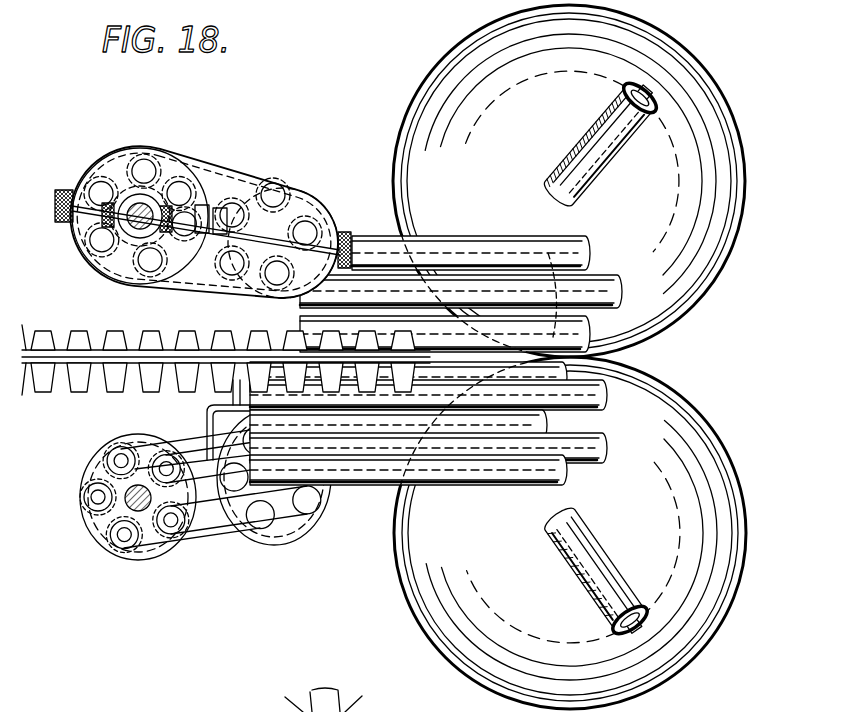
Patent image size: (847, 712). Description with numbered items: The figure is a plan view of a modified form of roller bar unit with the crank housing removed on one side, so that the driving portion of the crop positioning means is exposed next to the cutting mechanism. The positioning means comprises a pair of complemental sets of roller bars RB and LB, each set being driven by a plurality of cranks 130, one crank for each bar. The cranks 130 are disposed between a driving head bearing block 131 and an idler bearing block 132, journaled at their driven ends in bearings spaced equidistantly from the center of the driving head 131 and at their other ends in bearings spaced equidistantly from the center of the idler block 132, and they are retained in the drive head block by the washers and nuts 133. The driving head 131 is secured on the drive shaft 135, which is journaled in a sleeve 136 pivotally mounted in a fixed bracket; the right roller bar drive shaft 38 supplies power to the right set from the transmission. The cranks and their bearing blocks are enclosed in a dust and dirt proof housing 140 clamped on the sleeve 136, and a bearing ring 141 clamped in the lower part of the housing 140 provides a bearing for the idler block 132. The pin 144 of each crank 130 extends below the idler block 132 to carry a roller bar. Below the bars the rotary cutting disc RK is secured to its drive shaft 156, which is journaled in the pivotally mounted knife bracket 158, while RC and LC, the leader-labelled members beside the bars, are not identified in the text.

The right roller bar drive shaft 38 is at (138, 205).
The crank 130 is at (207, 177).
The driving head bearing block 131 is at (157, 553).
The idler bearing block 132 is at (285, 527).
The washers and nuts 133 is at (113, 452).
The drive shaft 135 is at (133, 502).
The sleeve 136 is at (140, 198).
The housing 140 is at (227, 165).
The bearing ring 141 is at (307, 163).
The pin 144 is at (283, 157).
The drive shaft 156 is at (658, 93).
The knife bracket 158 is at (617, 152).
The rotary cutting disc RK is at (688, 711).
The roller bar set RB is at (365, 231).
The roller bar set LB is at (360, 484).
The right cam screw RC is at (58, 327).
The left cam screw LC is at (55, 397).